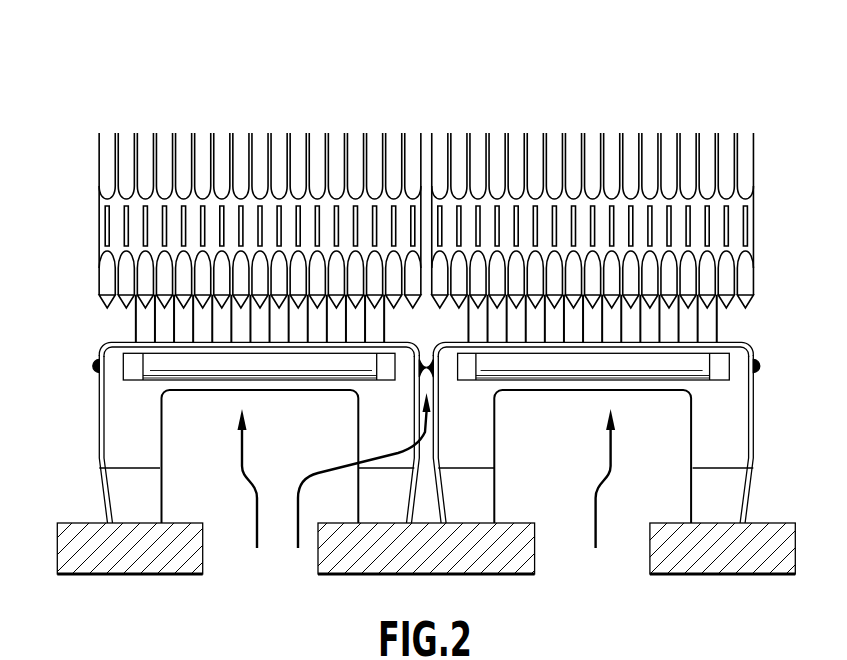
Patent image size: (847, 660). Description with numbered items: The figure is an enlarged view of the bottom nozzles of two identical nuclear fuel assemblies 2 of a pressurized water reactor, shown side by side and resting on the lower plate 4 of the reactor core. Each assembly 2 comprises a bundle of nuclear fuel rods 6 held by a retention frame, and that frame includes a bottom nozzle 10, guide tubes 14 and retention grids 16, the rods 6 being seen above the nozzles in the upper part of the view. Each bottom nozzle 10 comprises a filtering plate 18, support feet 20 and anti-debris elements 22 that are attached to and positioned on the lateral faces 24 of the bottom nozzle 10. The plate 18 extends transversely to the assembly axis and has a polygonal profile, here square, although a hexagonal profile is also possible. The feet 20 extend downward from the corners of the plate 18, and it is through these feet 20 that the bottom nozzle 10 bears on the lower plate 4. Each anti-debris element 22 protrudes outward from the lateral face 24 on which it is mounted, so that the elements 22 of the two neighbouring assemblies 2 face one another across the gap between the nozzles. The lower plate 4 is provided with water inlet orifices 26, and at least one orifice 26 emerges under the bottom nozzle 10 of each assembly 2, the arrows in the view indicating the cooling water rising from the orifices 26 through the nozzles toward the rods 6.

The nuclear fuel assembly 2 is at (427, 177).
The lower plate 4 is at (729, 590).
The nuclear fuel rods 6 is at (609, 133).
The bottom nozzle 10 is at (430, 431).
The guide tubes 14 is at (667, 326).
The retention grids 16 is at (746, 238).
The filtering plate 18 is at (750, 340).
The support feet 20 is at (730, 460).
The anti-debris elements 22 is at (708, 381).
The lateral faces 24 is at (700, 412).
The water inlet orifices 26 is at (633, 562).